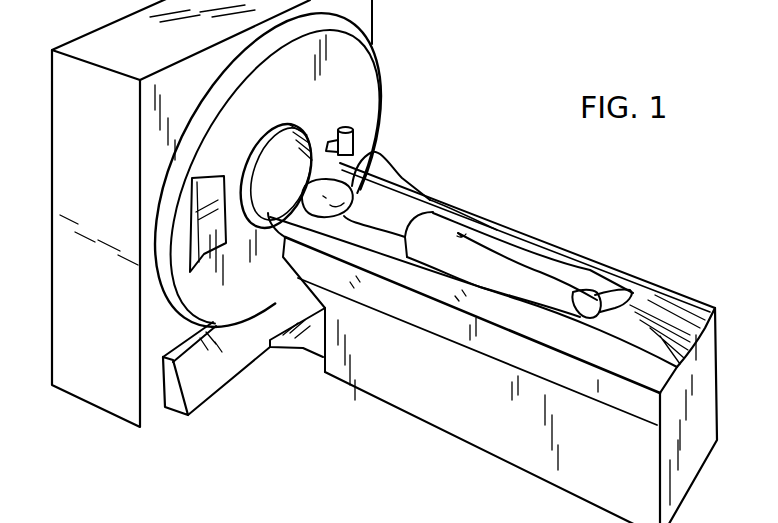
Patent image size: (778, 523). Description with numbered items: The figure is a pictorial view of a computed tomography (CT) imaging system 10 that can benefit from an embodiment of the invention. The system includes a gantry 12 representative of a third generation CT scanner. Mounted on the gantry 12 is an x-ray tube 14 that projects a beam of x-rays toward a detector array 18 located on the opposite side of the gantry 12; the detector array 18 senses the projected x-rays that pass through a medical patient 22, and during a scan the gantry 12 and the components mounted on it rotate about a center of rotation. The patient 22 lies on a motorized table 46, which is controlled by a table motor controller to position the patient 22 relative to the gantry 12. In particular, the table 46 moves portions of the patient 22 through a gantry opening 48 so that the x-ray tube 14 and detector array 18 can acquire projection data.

The computed tomography (CT) imaging system 10 is at (471, 81).
The gantry 12 is at (361, 96).
The x-ray tube 14 is at (357, 143).
The detector array 18 is at (208, 268).
The medical patient 22 is at (405, 206).
The motorized table 46 is at (487, 434).
The gantry opening 48 is at (263, 166).